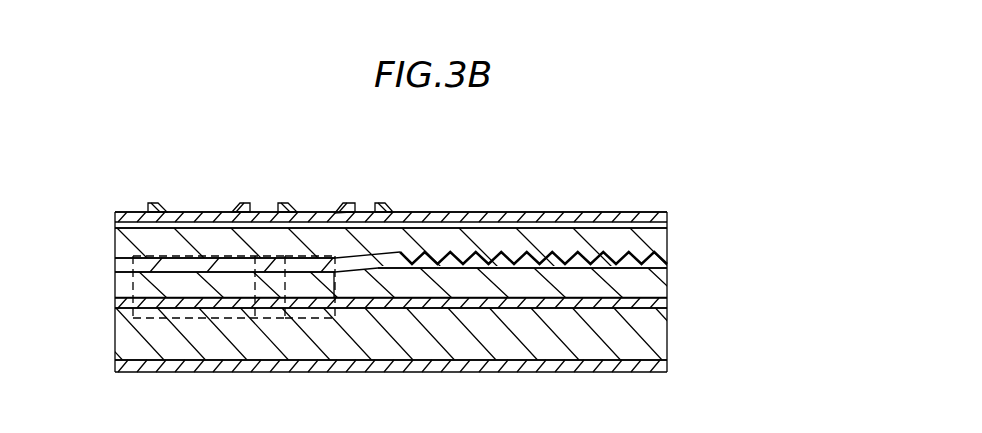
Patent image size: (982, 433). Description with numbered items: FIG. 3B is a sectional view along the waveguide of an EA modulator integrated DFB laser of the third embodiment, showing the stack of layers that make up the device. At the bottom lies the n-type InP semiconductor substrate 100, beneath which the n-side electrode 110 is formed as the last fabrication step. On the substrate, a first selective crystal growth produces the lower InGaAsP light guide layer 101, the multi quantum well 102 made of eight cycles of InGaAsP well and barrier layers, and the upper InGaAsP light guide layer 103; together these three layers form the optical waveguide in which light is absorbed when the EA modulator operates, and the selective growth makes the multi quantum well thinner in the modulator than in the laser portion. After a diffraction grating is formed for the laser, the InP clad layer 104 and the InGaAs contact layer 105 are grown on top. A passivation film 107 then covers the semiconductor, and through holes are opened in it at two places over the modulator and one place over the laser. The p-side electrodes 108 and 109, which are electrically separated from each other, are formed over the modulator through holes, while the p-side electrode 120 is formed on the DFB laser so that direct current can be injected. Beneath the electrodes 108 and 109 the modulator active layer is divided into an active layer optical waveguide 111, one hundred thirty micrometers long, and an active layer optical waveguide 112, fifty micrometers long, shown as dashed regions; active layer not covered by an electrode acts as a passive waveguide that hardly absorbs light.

The n-type InP semiconductor substrate 100 is at (658, 338).
The lower InGaAsP light guide layer 101 is at (667, 306).
The multi quantum well 102 is at (658, 283).
The upper InGaAsP light guide layer 103 is at (668, 268).
The InP clad layer 104 is at (658, 243).
The InGaAs contact layer 105 is at (668, 224).
The passivation film 107 is at (127, 212).
The p-side electrode 108 is at (193, 212).
The p-side electrode 109 is at (320, 212).
The n-side electrode 110 is at (450, 373).
The active layer optical waveguide 111 is at (192, 318).
The active layer optical waveguide 112 is at (308, 318).
The p-side electrode 120 is at (450, 212).